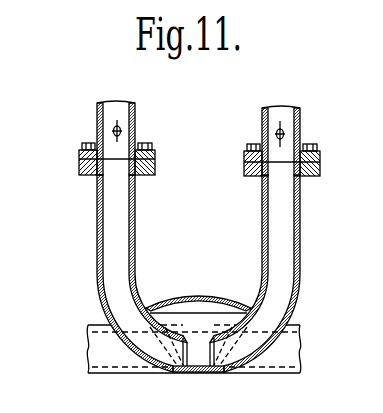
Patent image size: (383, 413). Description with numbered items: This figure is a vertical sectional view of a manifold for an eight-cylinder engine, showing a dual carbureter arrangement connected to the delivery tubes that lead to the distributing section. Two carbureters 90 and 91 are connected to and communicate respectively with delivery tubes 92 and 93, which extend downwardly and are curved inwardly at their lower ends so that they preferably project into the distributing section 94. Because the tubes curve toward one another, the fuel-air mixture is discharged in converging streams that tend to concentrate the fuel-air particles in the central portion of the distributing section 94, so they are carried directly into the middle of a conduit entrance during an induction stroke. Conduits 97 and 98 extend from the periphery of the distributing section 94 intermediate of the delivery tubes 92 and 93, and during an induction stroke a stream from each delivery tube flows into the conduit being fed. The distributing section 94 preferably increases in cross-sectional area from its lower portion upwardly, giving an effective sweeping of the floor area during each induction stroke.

The carbureter 90 is at (299, 128).
The carbureter 91 is at (98, 114).
The delivery tube 92 is at (299, 245).
The delivery tube 93 is at (99, 236).
The distributing section 94 is at (225, 367).
The conduit 97 is at (127, 358).
The conduit 98 is at (282, 358).